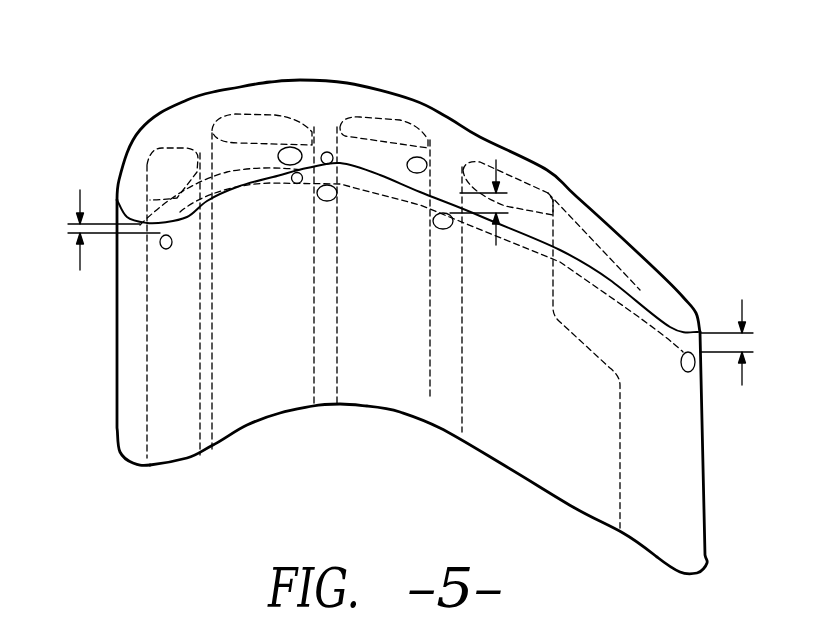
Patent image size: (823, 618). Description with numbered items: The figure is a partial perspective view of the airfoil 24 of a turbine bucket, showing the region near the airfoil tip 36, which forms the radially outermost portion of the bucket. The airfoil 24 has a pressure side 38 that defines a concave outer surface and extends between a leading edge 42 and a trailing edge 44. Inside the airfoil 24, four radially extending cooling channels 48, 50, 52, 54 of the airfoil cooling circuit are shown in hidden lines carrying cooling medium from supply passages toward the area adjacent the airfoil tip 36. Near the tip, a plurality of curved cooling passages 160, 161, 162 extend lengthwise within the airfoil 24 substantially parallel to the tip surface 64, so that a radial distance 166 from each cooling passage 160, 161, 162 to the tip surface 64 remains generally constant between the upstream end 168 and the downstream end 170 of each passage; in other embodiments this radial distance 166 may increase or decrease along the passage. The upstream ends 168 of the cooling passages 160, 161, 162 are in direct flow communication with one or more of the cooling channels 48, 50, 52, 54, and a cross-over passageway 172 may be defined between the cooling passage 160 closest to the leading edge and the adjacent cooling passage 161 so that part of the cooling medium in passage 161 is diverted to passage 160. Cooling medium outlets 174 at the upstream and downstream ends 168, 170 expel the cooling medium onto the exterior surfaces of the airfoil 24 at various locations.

The airfoil 24 is at (136, 89).
The airfoil tip 36 is at (578, 194).
The pressure side 38 is at (380, 393).
The leading edge 42 is at (115, 377).
The trailing edge 44 is at (703, 473).
The cooling channel 48 is at (147, 433).
The cooling channel 50 is at (200, 418).
The cooling channel 52 is at (430, 397).
The cooling channel 54 is at (622, 503).
The tip surface 64 is at (345, 102).
The cooling passage 160 is at (247, 195).
The cooling passage 161 is at (382, 197).
The cooling passage 162 is at (613, 265).
The radial distance 166 is at (68, 230).
The upstream end 168 is at (313, 163).
The downstream end 170 is at (297, 190).
The cross-over passageway 172 is at (303, 128).
The cooling medium outlet 174 is at (165, 250).